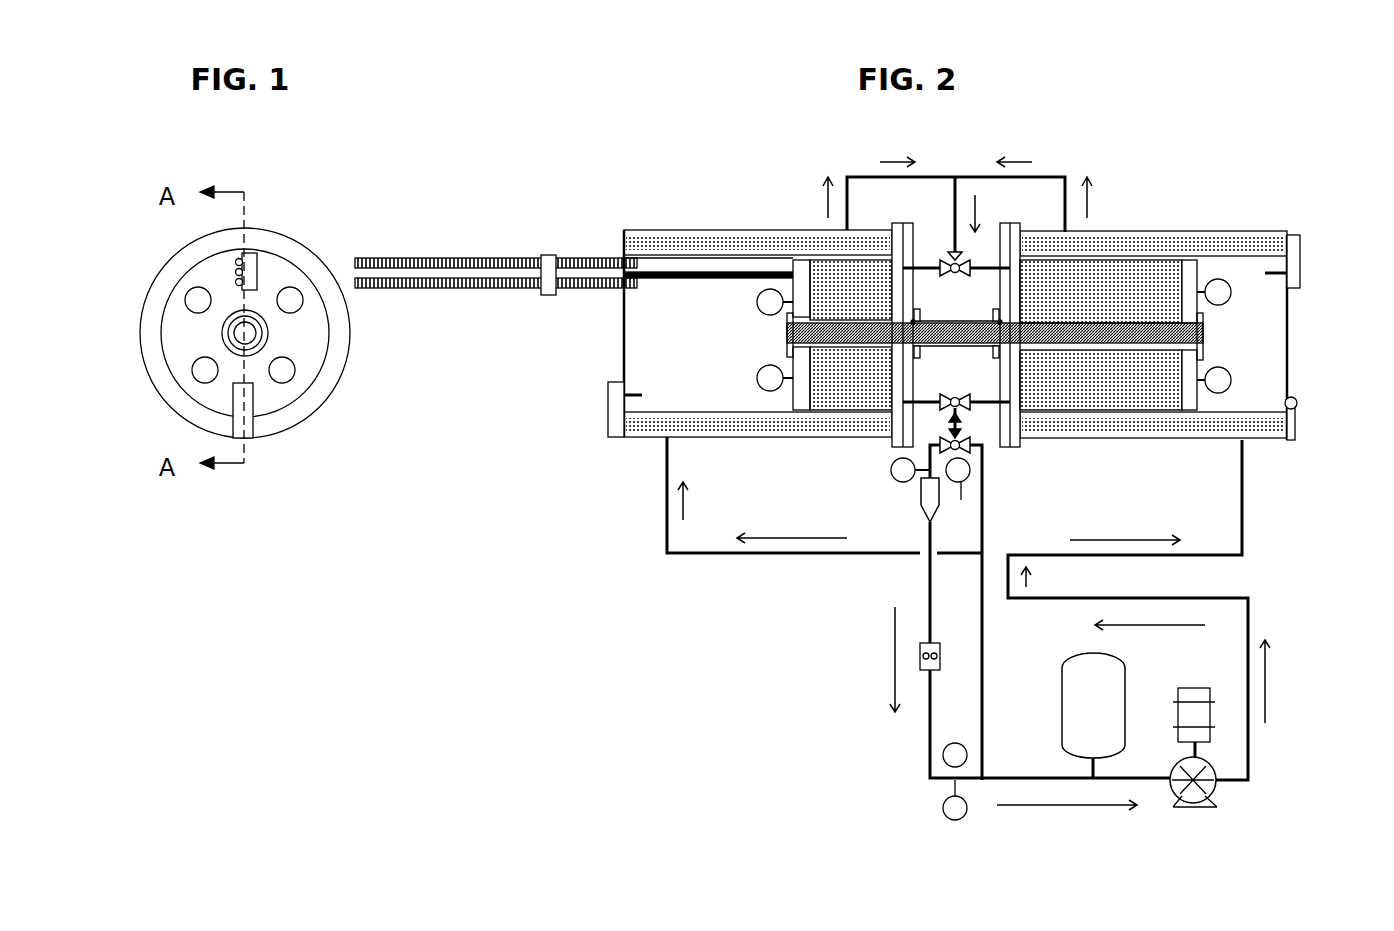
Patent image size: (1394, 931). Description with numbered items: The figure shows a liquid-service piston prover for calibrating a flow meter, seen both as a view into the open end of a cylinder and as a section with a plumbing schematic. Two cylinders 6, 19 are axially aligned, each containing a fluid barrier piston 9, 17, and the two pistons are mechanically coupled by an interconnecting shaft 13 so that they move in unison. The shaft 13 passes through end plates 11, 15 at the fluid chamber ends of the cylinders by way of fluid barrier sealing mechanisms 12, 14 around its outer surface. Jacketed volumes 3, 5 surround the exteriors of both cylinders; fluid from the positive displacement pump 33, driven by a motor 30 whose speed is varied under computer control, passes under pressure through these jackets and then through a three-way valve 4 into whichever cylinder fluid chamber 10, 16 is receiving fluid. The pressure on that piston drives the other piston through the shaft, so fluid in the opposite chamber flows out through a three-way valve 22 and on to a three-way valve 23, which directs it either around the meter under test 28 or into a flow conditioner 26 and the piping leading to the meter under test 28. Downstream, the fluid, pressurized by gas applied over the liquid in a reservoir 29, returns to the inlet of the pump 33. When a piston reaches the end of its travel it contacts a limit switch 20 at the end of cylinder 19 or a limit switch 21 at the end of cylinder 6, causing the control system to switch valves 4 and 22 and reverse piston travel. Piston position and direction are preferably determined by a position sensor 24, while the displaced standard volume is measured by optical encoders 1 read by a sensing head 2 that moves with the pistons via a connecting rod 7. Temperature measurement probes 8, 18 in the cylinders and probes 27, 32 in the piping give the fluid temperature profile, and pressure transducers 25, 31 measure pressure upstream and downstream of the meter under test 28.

In FIG. 1, the optical encoders 1 is at (236, 262).
In FIG. 2, the optical encoders 1 is at (397, 258).
In FIG. 1, the sensing head 2 is at (258, 262).
In FIG. 2, the sensing head 2 is at (550, 256).
In FIG. 1, the jacketed volume 3 is at (183, 392).
In FIG. 2, the jacketed volume 3 is at (720, 245).
In FIG. 2, the three-way valve 4 is at (950, 262).
In FIG. 2, the jacketed volume 5 is at (1165, 243).
In FIG. 1, the cylinder 6 is at (278, 273).
In FIG. 2, the cylinder 6 is at (667, 362).
In FIG. 2, the connecting rod 7 is at (697, 279).
In FIG. 1, the temperature measurement probes 8 is at (192, 370).
In FIG. 2, the temperature measurement probes 8 is at (762, 313).
In FIG. 2, the fluid barrier piston 9 is at (803, 283).
In FIG. 2, the cylinder fluid chamber 10 is at (851, 335).
In FIG. 2, the end plate 11 is at (903, 299).
In FIG. 2, the fluid barrier sealing mechanism 12 is at (918, 313).
In FIG. 2, the interconnecting shaft 13 is at (953, 338).
In FIG. 2, the fluid barrier sealing mechanism 14 is at (995, 313).
In FIG. 2, the end plate 15 is at (1010, 303).
In FIG. 2, the cylinder fluid chamber 16 is at (1101, 335).
In FIG. 2, the fluid barrier piston 17 is at (1188, 307).
In FIG. 2, the temperature measurement probes 18 is at (1223, 303).
In FIG. 2, the cylinder 19 is at (1257, 378).
In FIG. 2, the limit switch 20 is at (1293, 272).
In FIG. 1, the limit switch 21 is at (248, 422).
In FIG. 2, the limit switch 21 is at (617, 395).
In FIG. 2, the three-way valve 22 is at (955, 398).
In FIG. 2, the three-way valve 23 is at (960, 440).
In FIG. 2, the position sensor 24 is at (1300, 402).
In FIG. 2, the pressure transducer 25 is at (892, 471).
In FIG. 2, the flow conditioner 26 is at (928, 490).
In FIG. 2, the temperature measurement probe 27 is at (962, 492).
In FIG. 2, the meter under test 28 is at (940, 653).
In FIG. 2, the reservoir 29 is at (1073, 695).
In FIG. 2, the motor 30 is at (1193, 713).
In FIG. 2, the pressure transducer 31 is at (955, 743).
In FIG. 2, the temperature measurement probe 32 is at (945, 817).
In FIG. 2, the positive displacement pump 33 is at (1192, 807).